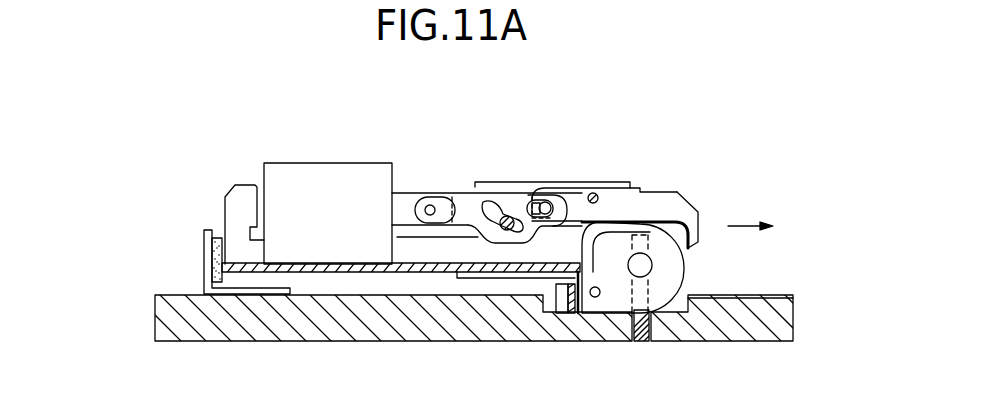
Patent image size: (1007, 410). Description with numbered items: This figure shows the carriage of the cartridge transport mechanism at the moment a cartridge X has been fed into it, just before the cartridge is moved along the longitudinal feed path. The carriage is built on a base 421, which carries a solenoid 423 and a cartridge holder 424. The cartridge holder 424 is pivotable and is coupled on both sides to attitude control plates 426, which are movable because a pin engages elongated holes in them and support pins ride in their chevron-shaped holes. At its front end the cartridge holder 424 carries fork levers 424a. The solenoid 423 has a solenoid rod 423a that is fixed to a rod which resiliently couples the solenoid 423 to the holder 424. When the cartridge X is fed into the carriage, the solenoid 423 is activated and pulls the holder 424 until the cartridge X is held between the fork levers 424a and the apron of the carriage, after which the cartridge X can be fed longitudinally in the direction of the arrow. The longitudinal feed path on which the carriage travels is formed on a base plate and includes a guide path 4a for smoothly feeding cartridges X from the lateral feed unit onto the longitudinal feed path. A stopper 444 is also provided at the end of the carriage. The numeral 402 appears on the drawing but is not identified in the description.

The stopper 444 is at (205, 260).
The solenoid 423 is at (318, 188).
The solenoid rod 423a is at (402, 203).
The attitude control plate 426 is at (508, 205).
The cartridge holder 424 is at (621, 206).
The fork lever 424a is at (677, 212).
The base 421 is at (446, 266).
The pivot shaft 402 is at (637, 283).
The cartridge X is at (658, 284).
The guide path 4a is at (740, 298).